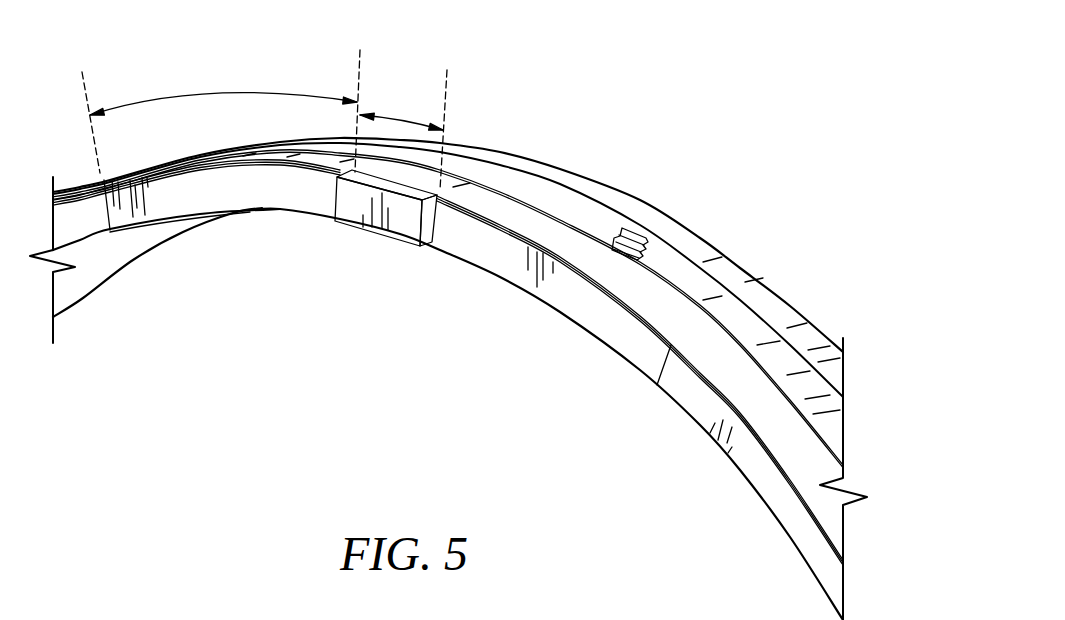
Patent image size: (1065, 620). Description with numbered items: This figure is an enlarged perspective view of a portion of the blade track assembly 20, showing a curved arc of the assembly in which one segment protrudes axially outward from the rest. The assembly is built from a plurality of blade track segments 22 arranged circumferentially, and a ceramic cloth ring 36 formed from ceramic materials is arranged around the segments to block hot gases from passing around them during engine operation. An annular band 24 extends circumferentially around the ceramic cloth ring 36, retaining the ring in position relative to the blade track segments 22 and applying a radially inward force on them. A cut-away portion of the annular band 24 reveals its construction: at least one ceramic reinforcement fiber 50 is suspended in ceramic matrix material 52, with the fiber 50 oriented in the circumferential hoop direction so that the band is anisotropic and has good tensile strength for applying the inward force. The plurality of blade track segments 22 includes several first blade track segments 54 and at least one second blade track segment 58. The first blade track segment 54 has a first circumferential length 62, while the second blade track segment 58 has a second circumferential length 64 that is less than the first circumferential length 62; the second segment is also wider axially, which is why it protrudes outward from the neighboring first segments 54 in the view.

The blade track assembly 20 is at (703, 119).
The blade track segments 22 is at (414, 345).
The annular band 24 is at (526, 177).
The ceramic cloth ring 36 is at (594, 189).
The ceramic reinforcement fiber 50 is at (634, 226).
The ceramic matrix material 52 is at (648, 231).
The first blade track segment 54 is at (268, 197).
The second blade track segment 58 is at (371, 250).
The first circumferential length 62 is at (233, 92).
The second circumferential length 64 is at (401, 118).